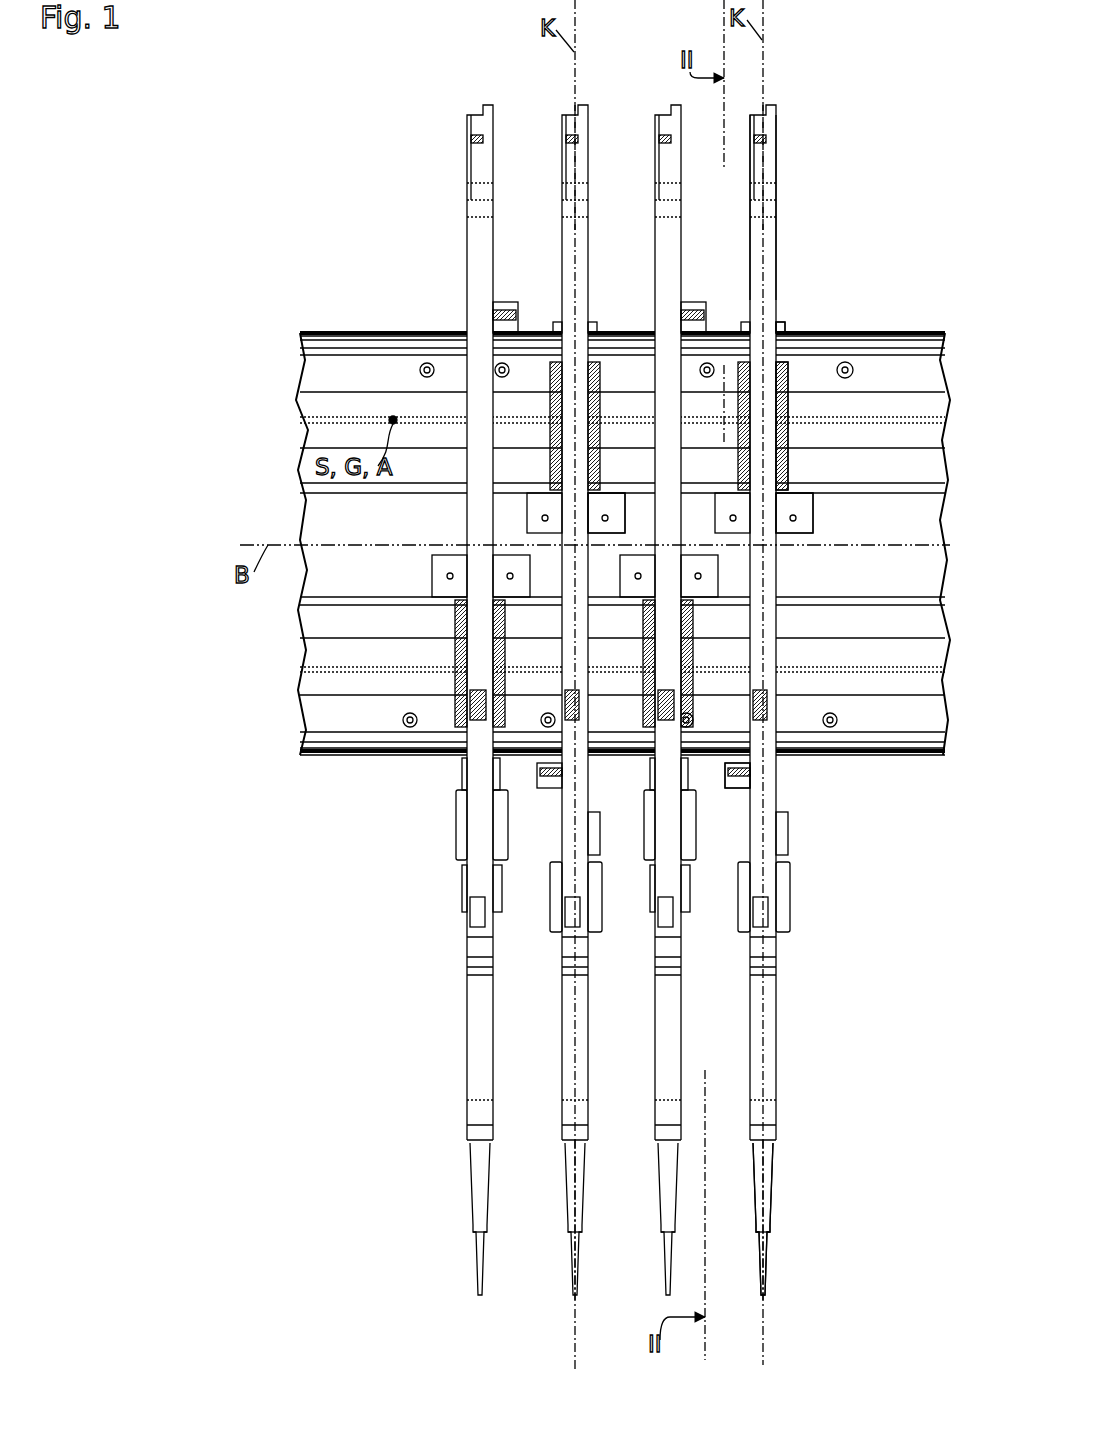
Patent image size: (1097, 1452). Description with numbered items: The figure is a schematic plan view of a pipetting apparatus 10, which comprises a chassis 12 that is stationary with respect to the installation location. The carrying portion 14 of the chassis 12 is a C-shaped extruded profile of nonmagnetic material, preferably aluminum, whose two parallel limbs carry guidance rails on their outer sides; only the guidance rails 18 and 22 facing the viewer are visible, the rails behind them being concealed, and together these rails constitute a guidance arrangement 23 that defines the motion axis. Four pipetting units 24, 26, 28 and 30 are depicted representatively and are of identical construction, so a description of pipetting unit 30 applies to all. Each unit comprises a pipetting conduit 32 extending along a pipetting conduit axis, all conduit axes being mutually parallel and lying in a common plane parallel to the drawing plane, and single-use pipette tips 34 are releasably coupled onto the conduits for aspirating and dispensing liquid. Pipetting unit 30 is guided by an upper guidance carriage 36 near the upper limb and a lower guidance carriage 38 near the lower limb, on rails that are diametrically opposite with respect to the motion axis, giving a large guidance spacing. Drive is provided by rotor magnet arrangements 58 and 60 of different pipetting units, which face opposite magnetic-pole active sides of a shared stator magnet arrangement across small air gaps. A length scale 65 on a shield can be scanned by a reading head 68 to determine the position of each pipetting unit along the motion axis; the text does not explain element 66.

The pipetting apparatus 10 is at (178, 143).
The chassis 12 is at (265, 392).
The carrying portion 14 is at (320, 525).
The guidance rail 18 is at (340, 333).
The guidance rail 22 is at (338, 755).
The guidance arrangement 23 is at (293, 322).
The pipetting unit 24 is at (463, 262).
The pipetting unit 26 is at (561, 262).
The pipetting unit 28 is at (651, 267).
The pipetting unit 30 is at (747, 265).
The pipetting conduit 32 is at (774, 292).
The single-use pipette tip 34 is at (752, 1130).
The upper guidance carriage 36 is at (783, 333).
The lower guidance carriage 38 is at (737, 785).
The rotor magnet arrangement 58 is at (800, 510).
The rotor magnet arrangement 60 is at (604, 502).
The length scale 65 is at (888, 430).
The lower channel 66 is at (880, 670).
The reading head 68 is at (778, 458).